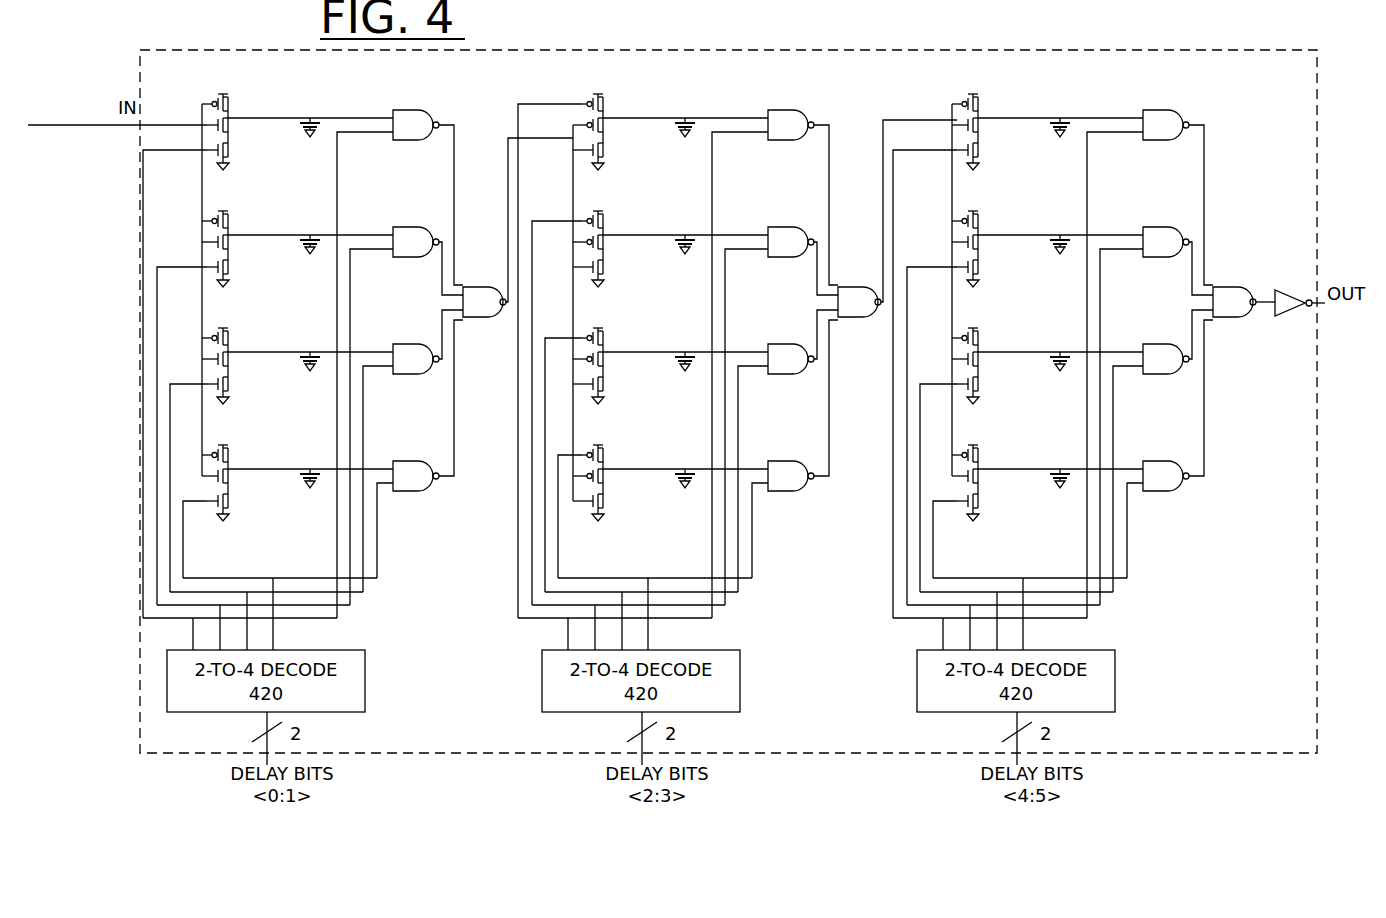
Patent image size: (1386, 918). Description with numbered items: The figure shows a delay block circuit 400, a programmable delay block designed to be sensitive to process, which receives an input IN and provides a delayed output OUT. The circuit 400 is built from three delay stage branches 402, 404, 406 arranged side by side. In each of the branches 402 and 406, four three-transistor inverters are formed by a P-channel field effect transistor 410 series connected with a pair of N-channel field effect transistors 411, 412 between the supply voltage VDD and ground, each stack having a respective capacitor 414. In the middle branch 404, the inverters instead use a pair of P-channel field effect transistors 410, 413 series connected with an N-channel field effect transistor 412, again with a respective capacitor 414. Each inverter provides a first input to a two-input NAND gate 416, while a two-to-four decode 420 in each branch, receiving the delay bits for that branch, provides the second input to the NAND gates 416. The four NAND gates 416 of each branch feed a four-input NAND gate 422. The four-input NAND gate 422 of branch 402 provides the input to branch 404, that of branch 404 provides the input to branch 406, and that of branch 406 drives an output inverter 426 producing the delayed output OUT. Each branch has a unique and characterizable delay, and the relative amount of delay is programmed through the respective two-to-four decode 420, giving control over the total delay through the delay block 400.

The delay block circuit 400 is at (952, 41).
The delay branch 402 is at (396, 90).
The delay branch 404 is at (707, 90).
The delay branch 406 is at (1072, 90).
The P-channel field effect transistor 410 is at (690, 293).
The N-channel field effect transistor 411 is at (610, 301).
The N-channel field effect transistor 412 is at (593, 332).
The P-channel field effect transistor 413 is at (610, 301).
The capacitor 414 is at (685, 303).
The 2-input NAND gate 416 is at (791, 300).
The 2-to-4 decode 420 is at (641, 681).
The 4-input NAND gate 422 is at (859, 314).
The output inverter 426 is at (1300, 315).